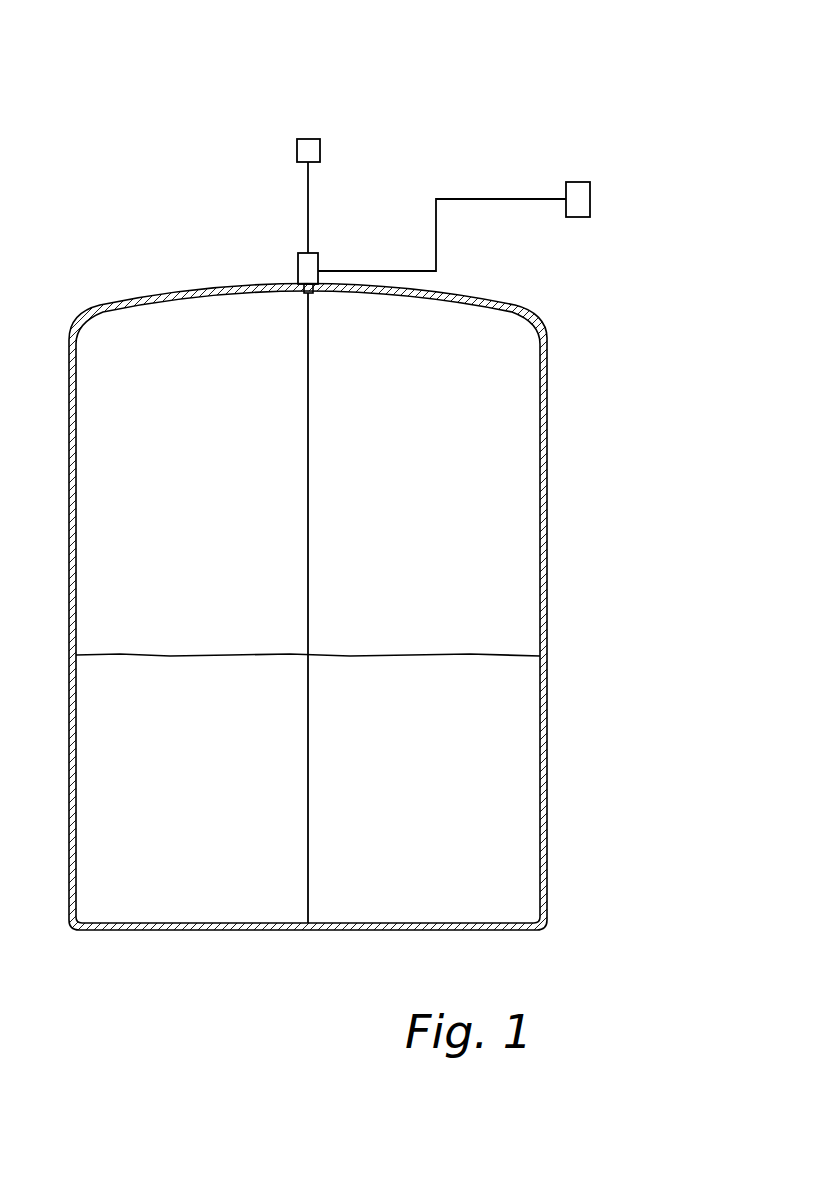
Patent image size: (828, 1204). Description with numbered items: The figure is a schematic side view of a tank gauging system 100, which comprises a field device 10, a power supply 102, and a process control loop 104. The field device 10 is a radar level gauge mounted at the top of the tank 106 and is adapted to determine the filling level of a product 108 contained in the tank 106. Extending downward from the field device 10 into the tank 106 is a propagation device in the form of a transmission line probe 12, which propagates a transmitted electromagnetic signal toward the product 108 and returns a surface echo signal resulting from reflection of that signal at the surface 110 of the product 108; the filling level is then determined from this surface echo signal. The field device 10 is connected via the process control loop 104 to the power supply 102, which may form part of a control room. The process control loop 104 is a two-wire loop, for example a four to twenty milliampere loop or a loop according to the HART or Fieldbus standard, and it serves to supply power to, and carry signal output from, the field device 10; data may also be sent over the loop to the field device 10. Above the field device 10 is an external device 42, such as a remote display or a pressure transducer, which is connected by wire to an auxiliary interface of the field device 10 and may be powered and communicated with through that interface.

The tank gauging system 100 is at (441, 137).
The field device 10 is at (298, 268).
The transmission line probe 12 is at (307, 460).
The external device 42 is at (307, 139).
The power supply 102 is at (575, 195).
The process control loop 104 is at (492, 200).
The tank 106 is at (550, 507).
The product 108 is at (513, 798).
The surface 110 is at (487, 656).